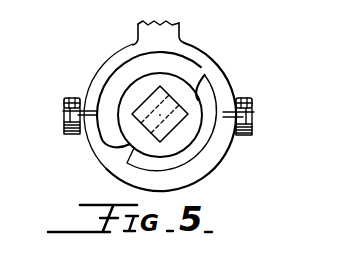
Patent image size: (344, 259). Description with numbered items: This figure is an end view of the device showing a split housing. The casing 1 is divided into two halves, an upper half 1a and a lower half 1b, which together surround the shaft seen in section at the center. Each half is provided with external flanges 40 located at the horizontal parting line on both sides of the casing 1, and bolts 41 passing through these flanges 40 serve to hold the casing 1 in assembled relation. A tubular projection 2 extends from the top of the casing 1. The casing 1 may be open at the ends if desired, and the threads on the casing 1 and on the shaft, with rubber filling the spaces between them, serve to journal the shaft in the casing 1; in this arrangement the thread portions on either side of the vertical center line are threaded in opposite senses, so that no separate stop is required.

The casing 1 is at (228, 84).
The upper half 1a is at (172, 75).
The lower half 1b is at (210, 166).
The pipe connection 2 is at (175, 27).
The external flanges 40 is at (65, 113).
The bolts 41 is at (72, 98).